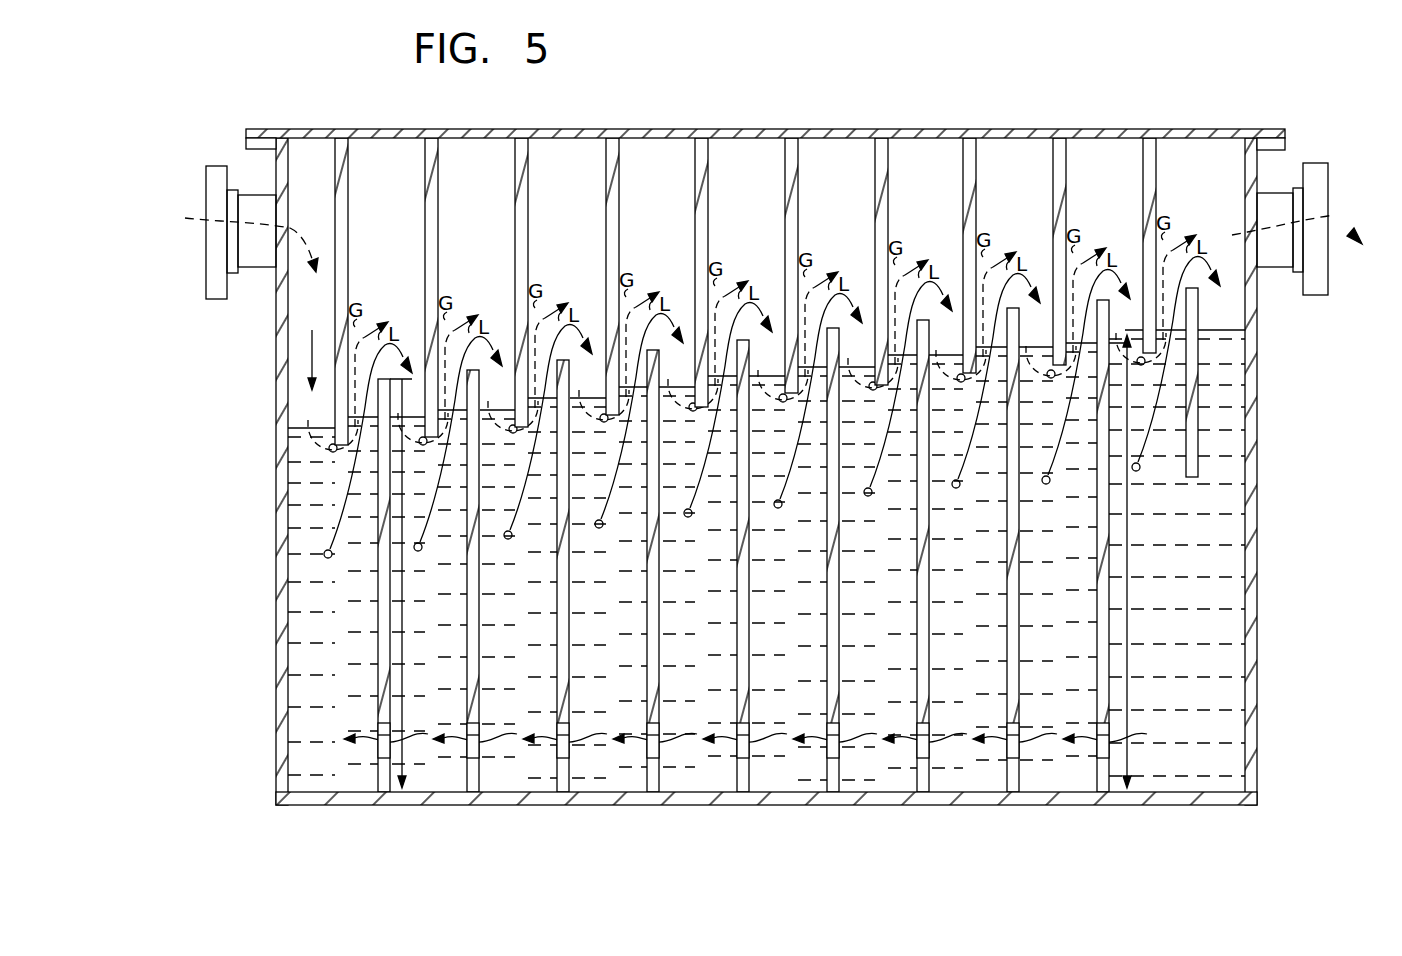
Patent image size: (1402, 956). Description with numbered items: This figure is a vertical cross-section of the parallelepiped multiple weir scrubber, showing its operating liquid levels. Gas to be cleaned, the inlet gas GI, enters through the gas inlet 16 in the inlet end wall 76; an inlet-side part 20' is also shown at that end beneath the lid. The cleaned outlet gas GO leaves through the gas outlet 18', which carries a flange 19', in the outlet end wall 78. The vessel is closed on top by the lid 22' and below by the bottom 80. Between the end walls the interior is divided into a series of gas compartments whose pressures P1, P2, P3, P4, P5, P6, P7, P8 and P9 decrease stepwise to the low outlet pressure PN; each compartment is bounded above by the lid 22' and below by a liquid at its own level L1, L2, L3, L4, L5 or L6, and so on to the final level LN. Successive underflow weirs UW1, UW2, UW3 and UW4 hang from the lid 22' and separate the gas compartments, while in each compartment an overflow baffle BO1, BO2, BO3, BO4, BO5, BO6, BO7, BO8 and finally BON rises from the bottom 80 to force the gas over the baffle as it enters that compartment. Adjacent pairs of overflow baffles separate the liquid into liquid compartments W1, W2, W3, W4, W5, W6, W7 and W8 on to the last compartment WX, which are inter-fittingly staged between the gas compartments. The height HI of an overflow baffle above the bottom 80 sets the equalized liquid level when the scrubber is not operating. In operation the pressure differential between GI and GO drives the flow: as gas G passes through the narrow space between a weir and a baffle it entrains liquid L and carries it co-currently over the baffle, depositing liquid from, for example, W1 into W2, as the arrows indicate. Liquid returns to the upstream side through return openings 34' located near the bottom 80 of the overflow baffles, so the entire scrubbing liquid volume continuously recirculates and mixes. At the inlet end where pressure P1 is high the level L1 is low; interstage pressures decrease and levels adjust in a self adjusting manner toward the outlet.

The lid 22' is at (765, 111).
The inlet end cap 20' is at (208, 152).
The flange 19' is at (1319, 148).
The gas inlet 16 is at (262, 268).
The gas outlet 18' is at (1293, 246).
The inlet end wall 76 is at (276, 478).
The outlet end wall 78 is at (1257, 498).
The bottom 80 is at (1155, 793).
The liquid return openings 34' is at (743, 783).
The underflow weir UW1 is at (350, 160).
The underflow weir UW2 is at (440, 165).
The underflow weir UW3 is at (530, 165).
The underflow weir UW4 is at (621, 165).
The overflow baffle BO1 is at (378, 622).
The overflow baffle BO2 is at (467, 782).
The overflow baffle BO3 is at (557, 782).
The overflow baffle BO4 is at (647, 782).
The overflow baffle BO5 is at (737, 782).
The overflow baffle BO6 is at (827, 782).
The overflow baffle BO7 is at (917, 782).
The overflow baffle BO8 is at (1007, 782).
The overflow baffle BON is at (1190, 450).
The liquid level L1 is at (300, 428).
The liquid level L2 is at (420, 415).
The liquid level L3 is at (510, 408).
The liquid level L4 is at (600, 396).
The liquid level L5 is at (690, 385).
The liquid level L6 is at (780, 374).
The liquid level LN is at (1222, 330).
The gas compartment pressure P1 is at (312, 177).
The gas compartment pressure P2 is at (384, 215).
The gas compartment pressure P3 is at (477, 210).
The gas compartment pressure P4 is at (562, 202).
The gas compartment pressure P5 is at (652, 192).
The gas compartment pressure P6 is at (745, 184).
The gas compartment pressure P7 is at (830, 180).
The gas compartment pressure P8 is at (922, 177).
The gas compartment pressure P9 is at (1010, 175).
The gas compartment pressure PN is at (1220, 170).
The liquid compartment W1 is at (328, 673).
The liquid compartment W2 is at (428, 695).
The liquid compartment W3 is at (523, 620).
The liquid compartment W4 is at (614, 607).
The liquid compartment W5 is at (706, 662).
The liquid compartment W6 is at (799, 647).
The liquid compartment W7 is at (884, 640).
The liquid compartment W8 is at (954, 668).
The liquid compartment WX is at (1155, 673).
The overflow baffle height HI is at (402, 583).
The inlet gas GI is at (195, 222).
The outlet gas GO is at (1340, 218).
The gas G is at (360, 428).
The liquid L is at (450, 421).